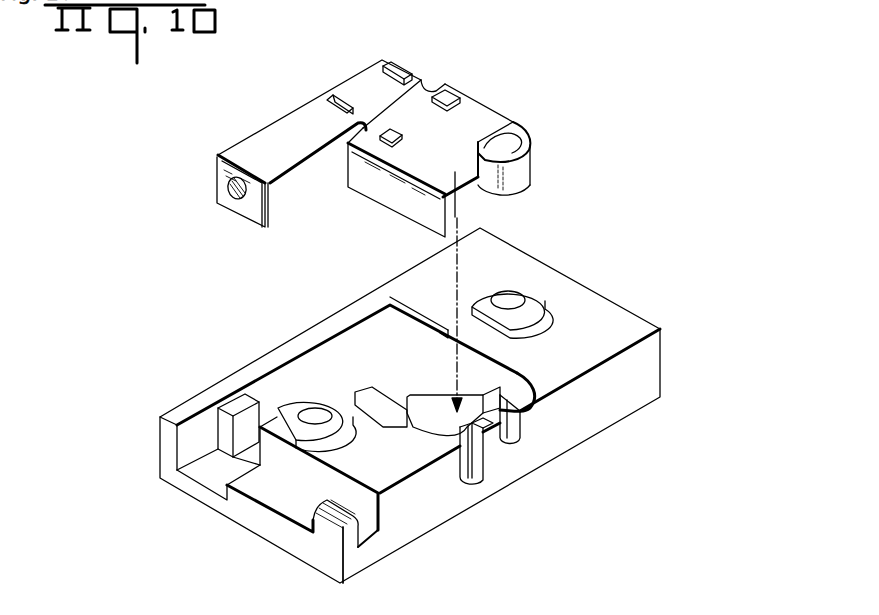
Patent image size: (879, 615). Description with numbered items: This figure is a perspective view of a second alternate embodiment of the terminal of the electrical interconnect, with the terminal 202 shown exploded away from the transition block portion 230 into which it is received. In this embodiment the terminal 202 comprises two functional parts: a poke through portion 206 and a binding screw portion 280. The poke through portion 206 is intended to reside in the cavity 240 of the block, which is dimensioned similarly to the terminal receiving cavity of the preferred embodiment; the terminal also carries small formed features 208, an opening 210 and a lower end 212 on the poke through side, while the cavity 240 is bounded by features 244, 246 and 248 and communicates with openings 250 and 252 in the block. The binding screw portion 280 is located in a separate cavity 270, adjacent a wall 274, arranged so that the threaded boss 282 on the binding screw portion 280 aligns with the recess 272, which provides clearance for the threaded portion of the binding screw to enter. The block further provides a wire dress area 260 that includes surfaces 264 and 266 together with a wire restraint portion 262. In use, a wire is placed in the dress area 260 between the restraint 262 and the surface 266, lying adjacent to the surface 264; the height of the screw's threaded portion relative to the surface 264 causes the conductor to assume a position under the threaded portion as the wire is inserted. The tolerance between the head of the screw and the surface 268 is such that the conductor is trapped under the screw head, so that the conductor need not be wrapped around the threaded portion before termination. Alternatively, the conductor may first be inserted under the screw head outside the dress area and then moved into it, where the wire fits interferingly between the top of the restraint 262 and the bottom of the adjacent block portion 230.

The terminal 202 is at (514, 110).
The poke through portion 206 is at (531, 165).
The tabs 208 is at (393, 75).
The slot 210 is at (392, 133).
The hook bottom end 212 is at (478, 192).
The block portion 230 is at (668, 338).
The cavity 240 is at (362, 355).
The rounded channel end 244 is at (508, 375).
The ramp 246 is at (380, 404).
The raised block 248 is at (433, 412).
The slot 250 is at (478, 482).
The slot 252 is at (507, 447).
The wire dress area 260 is at (274, 500).
The wire restraint portion 262 is at (350, 540).
The surface 264 is at (362, 535).
The surface 266 is at (372, 508).
The surface 268 is at (210, 473).
The cavity 270 is at (158, 478).
The recess 272 is at (244, 417).
The wall 274 is at (201, 413).
The binding screw portion 280 is at (243, 134).
The threaded boss 282 is at (232, 198).